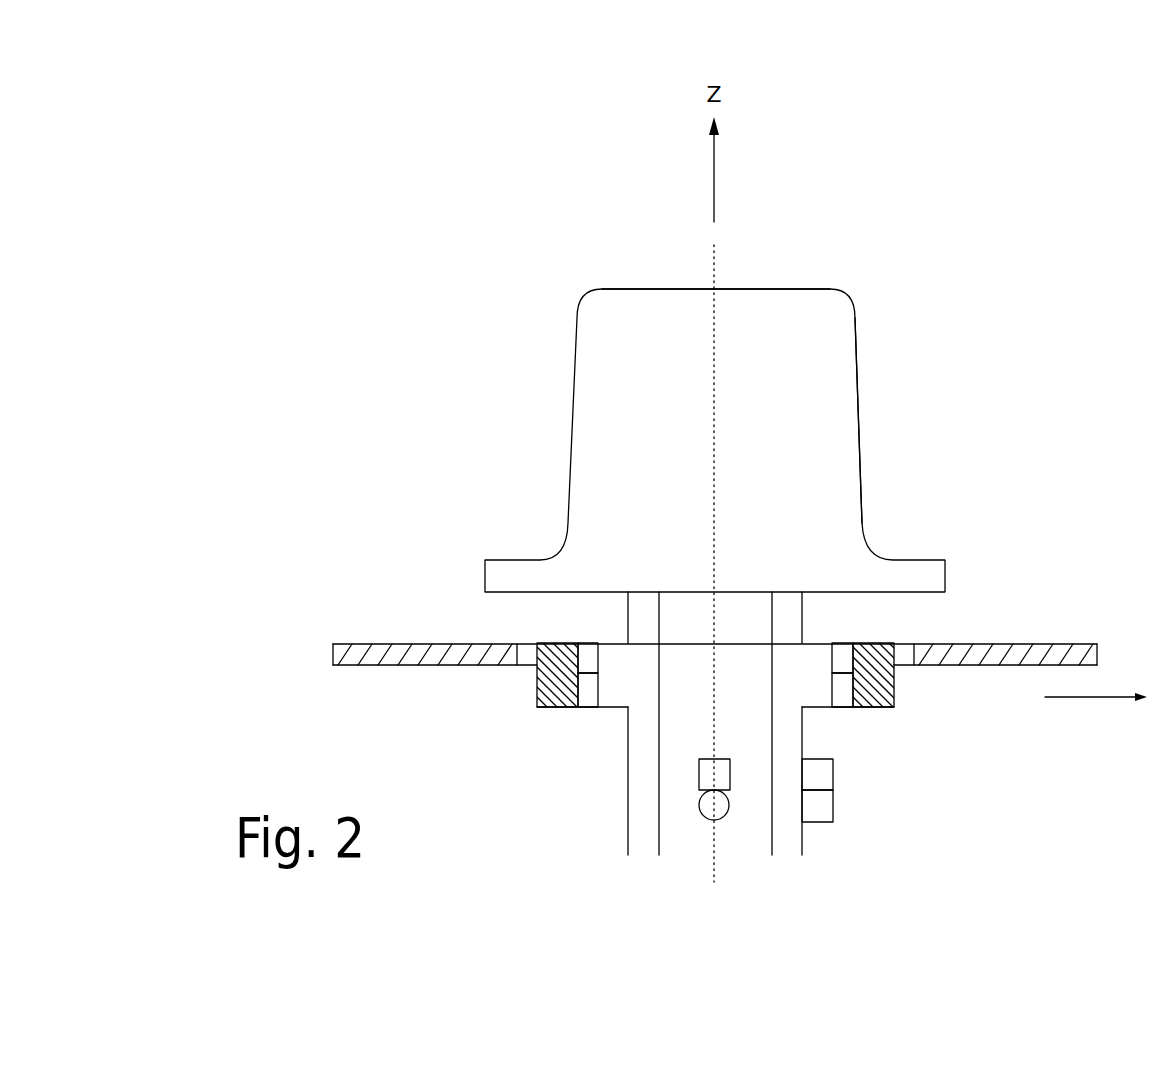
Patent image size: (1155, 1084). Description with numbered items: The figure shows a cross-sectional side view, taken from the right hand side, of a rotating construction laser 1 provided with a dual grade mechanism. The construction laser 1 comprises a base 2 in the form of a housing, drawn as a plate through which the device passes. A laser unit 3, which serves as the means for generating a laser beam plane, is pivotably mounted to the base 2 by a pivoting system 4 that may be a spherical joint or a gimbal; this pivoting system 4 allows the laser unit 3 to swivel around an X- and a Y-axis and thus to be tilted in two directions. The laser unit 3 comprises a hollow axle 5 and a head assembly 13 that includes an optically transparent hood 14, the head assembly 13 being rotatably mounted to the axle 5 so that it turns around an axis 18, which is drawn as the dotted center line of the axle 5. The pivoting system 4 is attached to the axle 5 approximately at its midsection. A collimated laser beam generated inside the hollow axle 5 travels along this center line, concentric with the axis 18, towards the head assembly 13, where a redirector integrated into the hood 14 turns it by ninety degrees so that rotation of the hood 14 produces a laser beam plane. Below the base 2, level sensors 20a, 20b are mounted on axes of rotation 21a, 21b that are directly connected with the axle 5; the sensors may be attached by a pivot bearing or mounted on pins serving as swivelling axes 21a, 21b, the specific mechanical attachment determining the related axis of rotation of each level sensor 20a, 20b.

The rotating construction laser 1 is at (924, 226).
The base 2 is at (963, 665).
The laser unit 3 is at (749, 397).
The pivoting system 4 is at (587, 677).
The hollow axle 5 is at (628, 787).
The head assembly 13 is at (652, 318).
The optically transparent hood 14 is at (855, 328).
The axis 18 is at (713, 265).
The level sensor 20a is at (730, 772).
The level sensor 20b is at (833, 772).
The axis of rotation 21a is at (699, 805).
The axis of rotation 21b is at (833, 808).